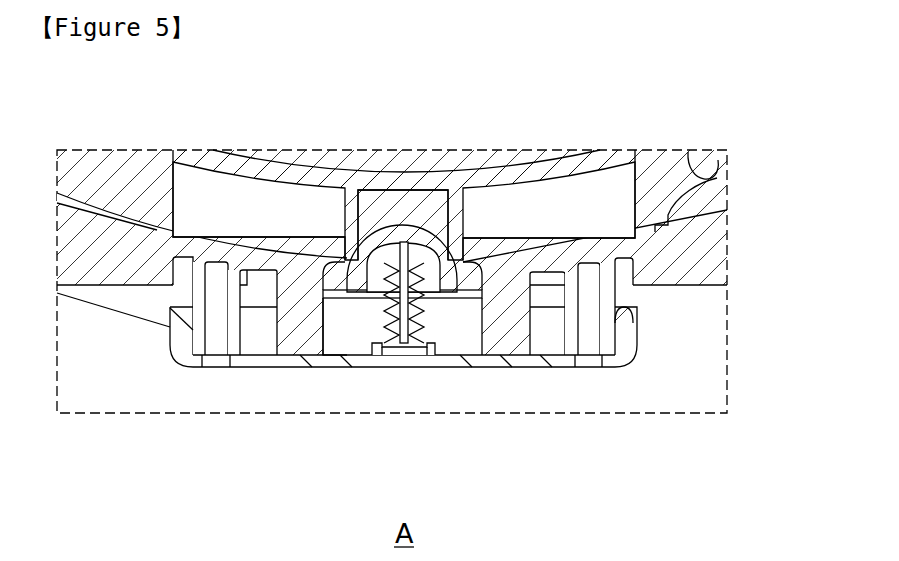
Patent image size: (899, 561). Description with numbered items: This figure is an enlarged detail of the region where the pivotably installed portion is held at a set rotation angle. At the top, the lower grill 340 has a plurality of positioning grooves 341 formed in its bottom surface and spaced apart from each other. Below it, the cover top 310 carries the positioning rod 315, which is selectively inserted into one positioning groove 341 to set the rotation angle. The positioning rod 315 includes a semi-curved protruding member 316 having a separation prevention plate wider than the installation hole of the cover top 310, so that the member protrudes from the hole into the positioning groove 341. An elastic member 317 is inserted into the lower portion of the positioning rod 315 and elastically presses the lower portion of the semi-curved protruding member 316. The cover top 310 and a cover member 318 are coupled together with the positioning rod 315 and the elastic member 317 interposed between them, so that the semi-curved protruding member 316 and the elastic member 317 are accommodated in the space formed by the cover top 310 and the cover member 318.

The cover top 310 is at (727, 237).
The positioning rod 315 is at (403, 372).
The semi-curved protruding member 316 is at (323, 300).
The elastic member 317 is at (380, 327).
The cover member 318 is at (412, 407).
The lower grill 340 is at (646, 160).
The positioning groove 341 is at (690, 153).